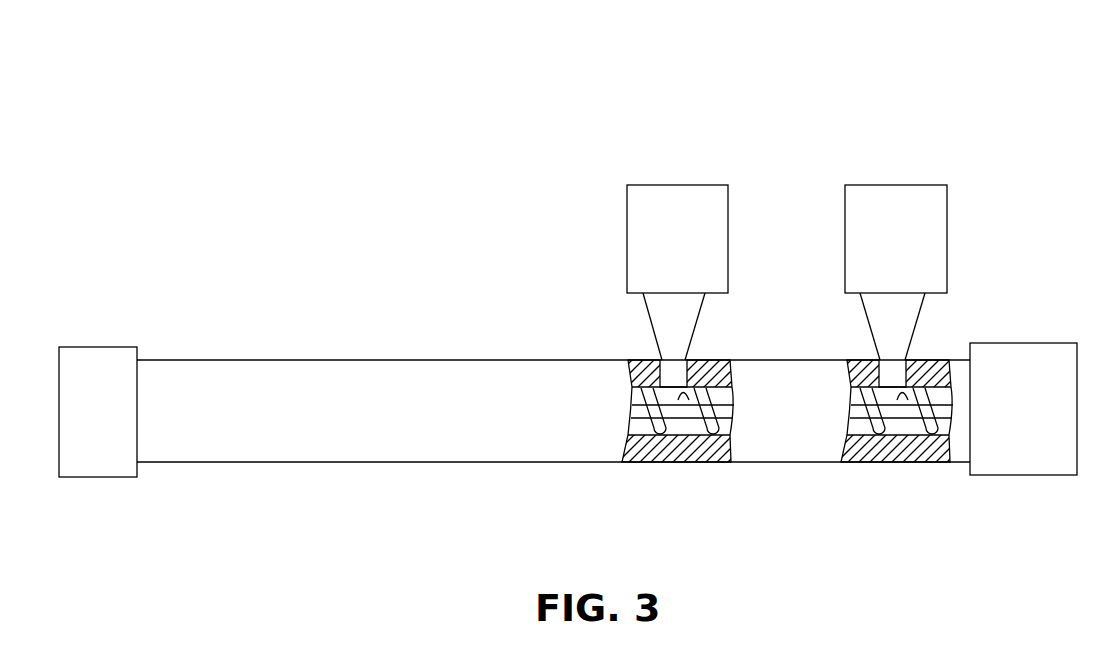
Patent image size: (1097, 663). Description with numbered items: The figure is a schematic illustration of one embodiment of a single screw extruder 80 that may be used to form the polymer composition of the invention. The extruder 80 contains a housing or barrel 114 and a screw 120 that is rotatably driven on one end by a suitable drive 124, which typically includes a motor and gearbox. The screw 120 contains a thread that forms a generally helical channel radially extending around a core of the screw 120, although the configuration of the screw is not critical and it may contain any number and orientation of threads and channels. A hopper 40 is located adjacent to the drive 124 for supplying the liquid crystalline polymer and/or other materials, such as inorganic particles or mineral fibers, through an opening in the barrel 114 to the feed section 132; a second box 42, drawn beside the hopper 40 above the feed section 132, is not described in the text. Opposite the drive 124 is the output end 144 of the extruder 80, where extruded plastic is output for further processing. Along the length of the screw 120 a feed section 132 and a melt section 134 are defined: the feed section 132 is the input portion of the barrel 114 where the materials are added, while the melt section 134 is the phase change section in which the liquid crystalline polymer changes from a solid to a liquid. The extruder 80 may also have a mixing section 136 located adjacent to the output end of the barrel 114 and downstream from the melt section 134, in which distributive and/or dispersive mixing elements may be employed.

The single screw extruder 80 is at (615, 80).
The barrel 114 is at (412, 407).
The screw 120 is at (860, 410).
The drive 124 is at (1039, 419).
The feed section 132 is at (943, 468).
The melt section 134 is at (573, 468).
The mixing section 136 is at (263, 357).
The output end 144 is at (116, 420).
The hopper 40 is at (908, 247).
The applicator 42 is at (687, 247).